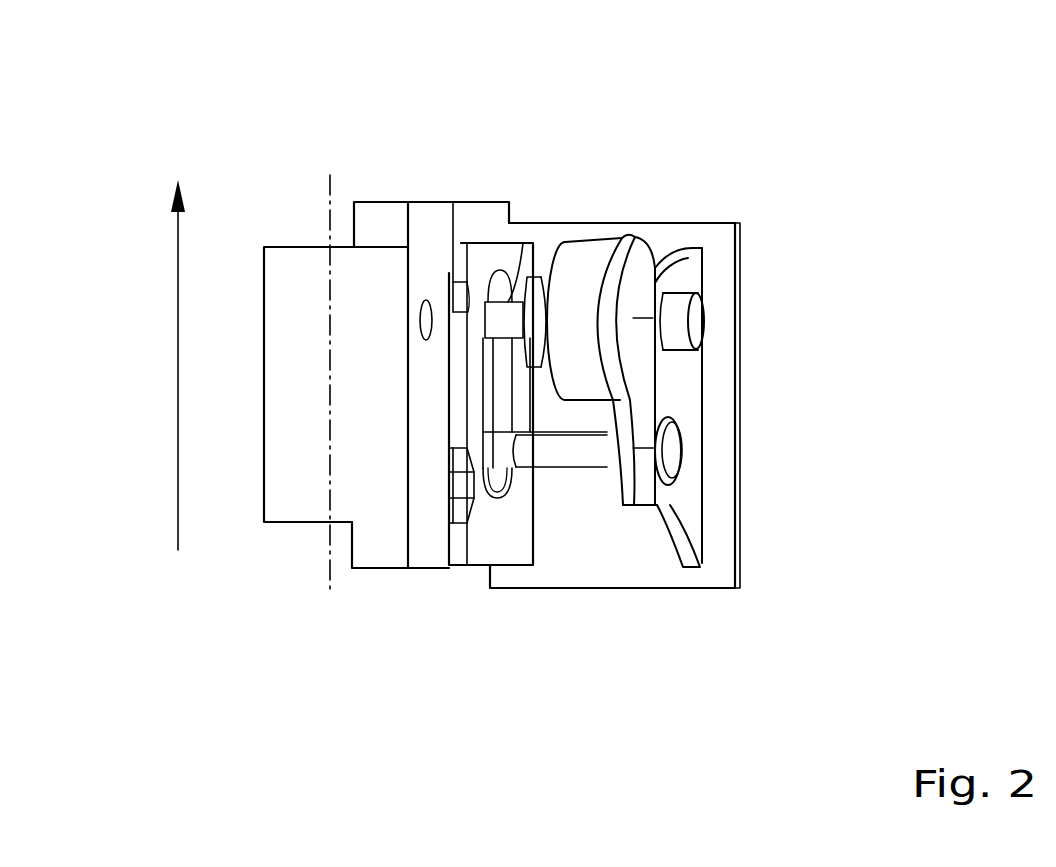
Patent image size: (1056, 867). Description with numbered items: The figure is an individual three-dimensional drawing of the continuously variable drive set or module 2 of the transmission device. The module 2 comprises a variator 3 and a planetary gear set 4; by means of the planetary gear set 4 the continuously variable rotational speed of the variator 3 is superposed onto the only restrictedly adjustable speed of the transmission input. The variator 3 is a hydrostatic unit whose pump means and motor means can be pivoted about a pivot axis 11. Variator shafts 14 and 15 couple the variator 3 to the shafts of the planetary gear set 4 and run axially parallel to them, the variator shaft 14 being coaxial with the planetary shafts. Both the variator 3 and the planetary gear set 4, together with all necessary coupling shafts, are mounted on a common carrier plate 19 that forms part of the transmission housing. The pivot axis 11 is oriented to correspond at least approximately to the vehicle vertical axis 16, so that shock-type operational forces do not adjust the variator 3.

The module 2 is at (287, 218).
The variator 3 is at (268, 537).
The planetary gear set 4 is at (601, 225).
The pivot axis 11 is at (328, 578).
The variator shaft 14 is at (492, 317).
The variator shaft 15 is at (541, 445).
The vehicle vertical axis 16 is at (175, 333).
The carrier plate 19 is at (720, 236).